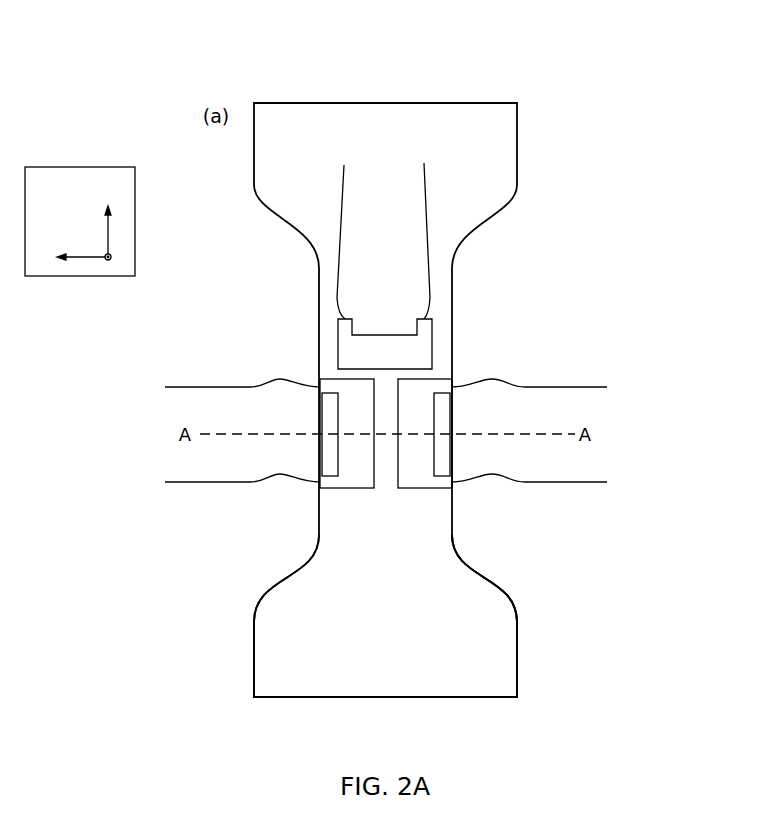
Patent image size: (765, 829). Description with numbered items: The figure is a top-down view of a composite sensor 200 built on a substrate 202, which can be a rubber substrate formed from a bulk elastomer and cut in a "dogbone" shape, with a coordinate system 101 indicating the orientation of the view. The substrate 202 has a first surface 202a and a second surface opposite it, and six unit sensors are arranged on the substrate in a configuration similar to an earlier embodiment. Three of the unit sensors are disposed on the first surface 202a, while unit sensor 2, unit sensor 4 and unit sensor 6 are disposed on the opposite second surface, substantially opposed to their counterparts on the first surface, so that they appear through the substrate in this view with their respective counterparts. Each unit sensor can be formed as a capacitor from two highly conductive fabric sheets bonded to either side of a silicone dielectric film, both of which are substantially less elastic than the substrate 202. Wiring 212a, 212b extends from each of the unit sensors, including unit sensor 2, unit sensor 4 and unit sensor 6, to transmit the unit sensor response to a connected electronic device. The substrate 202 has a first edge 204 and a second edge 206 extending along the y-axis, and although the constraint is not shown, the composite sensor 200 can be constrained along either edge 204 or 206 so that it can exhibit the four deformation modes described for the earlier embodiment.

The coordinate system 101 is at (72, 167).
The composite sensor 200 is at (610, 198).
The substrate 202 is at (251, 660).
The first surface 202a is at (505, 643).
The first edge 204 is at (497, 698).
The second edge 206 is at (418, 103).
The wiring 212a is at (343, 230).
The wiring 212b is at (433, 276).
The unit sensor 2 is at (352, 490).
The unit sensor 4 is at (433, 352).
The unit sensor 6 is at (420, 490).